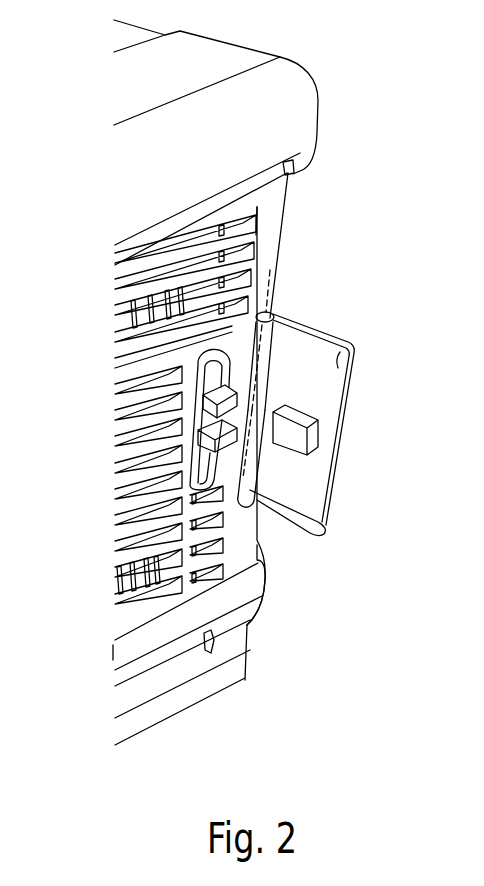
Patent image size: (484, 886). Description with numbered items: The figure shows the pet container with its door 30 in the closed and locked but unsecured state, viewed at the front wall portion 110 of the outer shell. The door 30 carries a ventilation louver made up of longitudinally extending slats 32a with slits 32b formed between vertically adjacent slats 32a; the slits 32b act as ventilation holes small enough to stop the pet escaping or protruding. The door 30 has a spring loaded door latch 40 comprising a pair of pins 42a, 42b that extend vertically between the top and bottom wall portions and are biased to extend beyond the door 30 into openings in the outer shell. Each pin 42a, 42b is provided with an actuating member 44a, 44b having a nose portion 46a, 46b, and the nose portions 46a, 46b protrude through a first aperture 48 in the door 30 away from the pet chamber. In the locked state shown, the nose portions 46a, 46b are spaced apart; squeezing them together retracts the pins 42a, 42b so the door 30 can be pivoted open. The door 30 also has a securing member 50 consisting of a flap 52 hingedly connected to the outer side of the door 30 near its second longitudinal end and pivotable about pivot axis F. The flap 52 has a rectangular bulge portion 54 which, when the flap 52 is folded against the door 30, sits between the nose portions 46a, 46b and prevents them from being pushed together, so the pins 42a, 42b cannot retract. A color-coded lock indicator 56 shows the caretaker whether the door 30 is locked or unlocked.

The front wall portion 110 is at (208, 175).
The lock indicator 56 is at (293, 173).
The door 30 is at (165, 485).
The slats 32a is at (170, 610).
The slits 32b is at (113, 338).
The pin 42a is at (258, 222).
The pin 42b is at (174, 522).
The first aperture 48 is at (198, 380).
The door latch 40 is at (311, 270).
The actuating member 44a is at (273, 316).
The actuating member 44b is at (243, 513).
The securing member 50 is at (353, 452).
The flap 52 is at (320, 510).
The bulge portion 54 is at (297, 433).
The nose portion 46a is at (258, 377).
The nose portion 46b is at (240, 470).